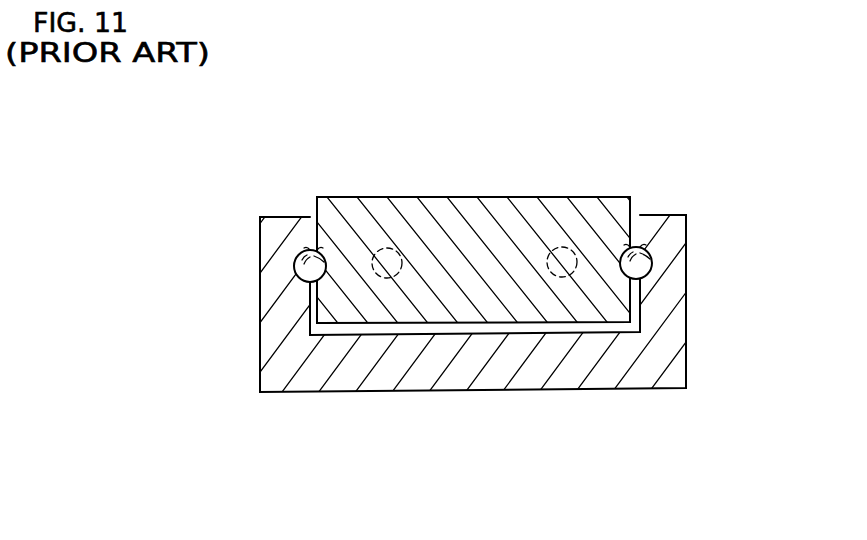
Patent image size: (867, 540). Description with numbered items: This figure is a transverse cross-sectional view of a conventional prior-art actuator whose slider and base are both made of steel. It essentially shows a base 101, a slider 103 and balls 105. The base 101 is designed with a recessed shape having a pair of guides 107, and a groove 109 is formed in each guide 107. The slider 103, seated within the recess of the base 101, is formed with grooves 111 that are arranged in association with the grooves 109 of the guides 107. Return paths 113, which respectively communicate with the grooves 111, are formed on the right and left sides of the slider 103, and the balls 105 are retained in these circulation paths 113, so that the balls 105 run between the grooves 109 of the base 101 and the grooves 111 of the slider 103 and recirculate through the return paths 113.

The base 101 is at (260, 347).
The slider 103 is at (477, 197).
The balls 105 is at (306, 280).
The guides 107 is at (296, 267).
The groove 109 is at (325, 336).
The grooves 111 is at (310, 250).
The return paths 113 is at (493, 187).